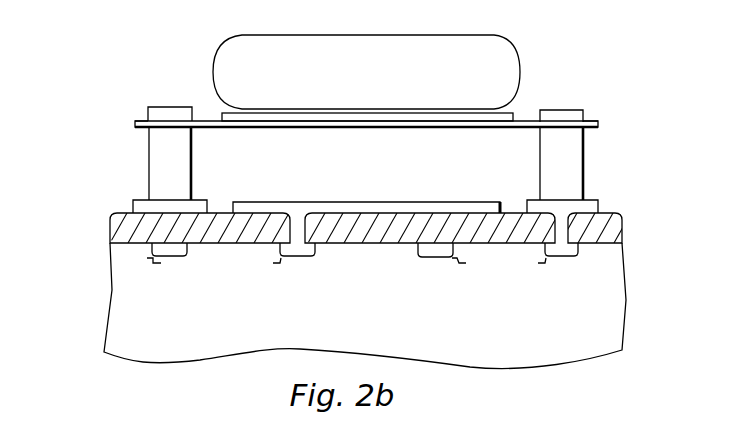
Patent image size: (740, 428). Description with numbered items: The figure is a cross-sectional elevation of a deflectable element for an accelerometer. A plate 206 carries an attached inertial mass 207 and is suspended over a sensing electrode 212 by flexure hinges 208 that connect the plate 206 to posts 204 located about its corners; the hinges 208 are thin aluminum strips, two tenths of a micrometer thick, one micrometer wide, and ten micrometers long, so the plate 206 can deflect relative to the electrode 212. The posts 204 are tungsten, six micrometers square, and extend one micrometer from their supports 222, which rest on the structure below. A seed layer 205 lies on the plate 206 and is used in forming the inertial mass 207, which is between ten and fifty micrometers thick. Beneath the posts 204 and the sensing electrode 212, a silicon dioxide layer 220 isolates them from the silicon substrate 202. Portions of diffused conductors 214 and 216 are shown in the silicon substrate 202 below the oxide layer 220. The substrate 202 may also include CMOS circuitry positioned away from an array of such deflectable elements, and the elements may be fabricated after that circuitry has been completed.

The silicon substrate 202 is at (360, 335).
The post 204 is at (173, 107).
The seed layer 205 is at (498, 110).
The plate 206 is at (363, 118).
The inertial mass 207 is at (326, 104).
The flexure hinge 208 is at (134, 122).
The sensing electrode 212 is at (254, 202).
The diffused conductor 214 is at (306, 258).
The diffused conductor 216 is at (180, 258).
The oxide layer 220 is at (365, 240).
The post support 222 is at (142, 200).